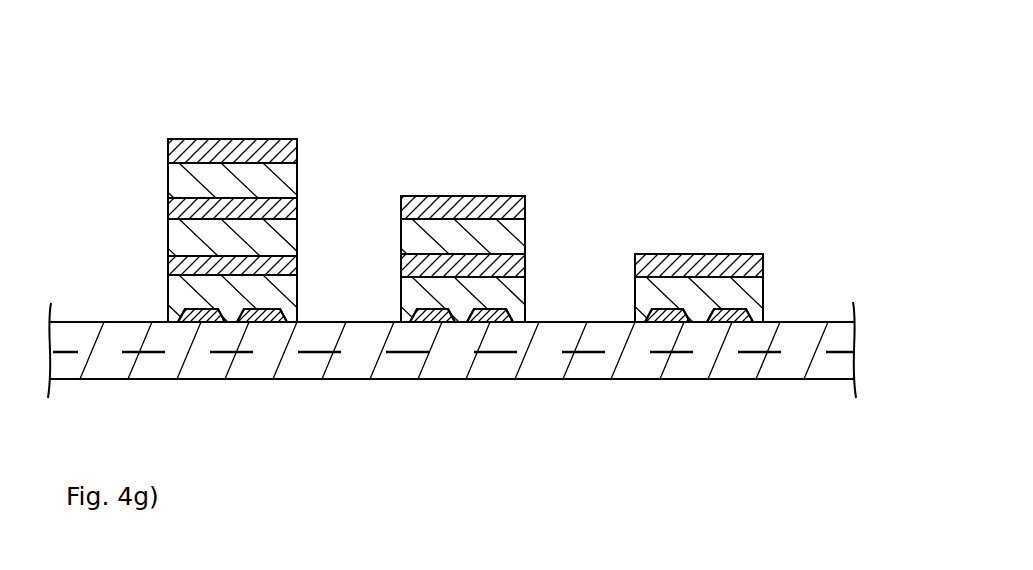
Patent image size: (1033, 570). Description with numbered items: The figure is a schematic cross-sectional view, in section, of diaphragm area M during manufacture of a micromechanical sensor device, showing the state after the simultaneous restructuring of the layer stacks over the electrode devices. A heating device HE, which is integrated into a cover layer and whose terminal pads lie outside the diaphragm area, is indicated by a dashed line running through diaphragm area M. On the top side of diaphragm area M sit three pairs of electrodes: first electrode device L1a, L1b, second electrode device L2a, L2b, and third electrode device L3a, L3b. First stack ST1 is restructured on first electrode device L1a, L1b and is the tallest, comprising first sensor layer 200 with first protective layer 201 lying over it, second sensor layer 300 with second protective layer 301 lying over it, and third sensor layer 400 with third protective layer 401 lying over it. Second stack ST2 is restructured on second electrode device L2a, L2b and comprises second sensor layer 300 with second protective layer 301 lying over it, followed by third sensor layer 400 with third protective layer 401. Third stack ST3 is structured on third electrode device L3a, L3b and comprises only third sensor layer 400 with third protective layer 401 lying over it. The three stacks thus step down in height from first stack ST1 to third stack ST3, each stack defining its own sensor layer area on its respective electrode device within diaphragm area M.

The third protective layer 401 is at (180, 147).
The third sensor layer 400 is at (180, 178).
The second protective layer 301 is at (180, 208).
The second sensor layer 300 is at (180, 238).
The first protective layer 201 is at (180, 268).
The first sensor layer 200 is at (180, 297).
The first electrode device L1a is at (262, 323).
The first electrode device L1b is at (201, 323).
The second electrode device L2a is at (490, 323).
The second electrode device L2b is at (432, 323).
The third electrode device L3a is at (723, 323).
The third electrode device L3b is at (668, 323).
The heating device HE is at (331, 354).
The diaphragm area M is at (588, 365).
The first stack ST1 is at (246, 166).
The second stack ST2 is at (467, 199).
The third stack ST3 is at (702, 229).